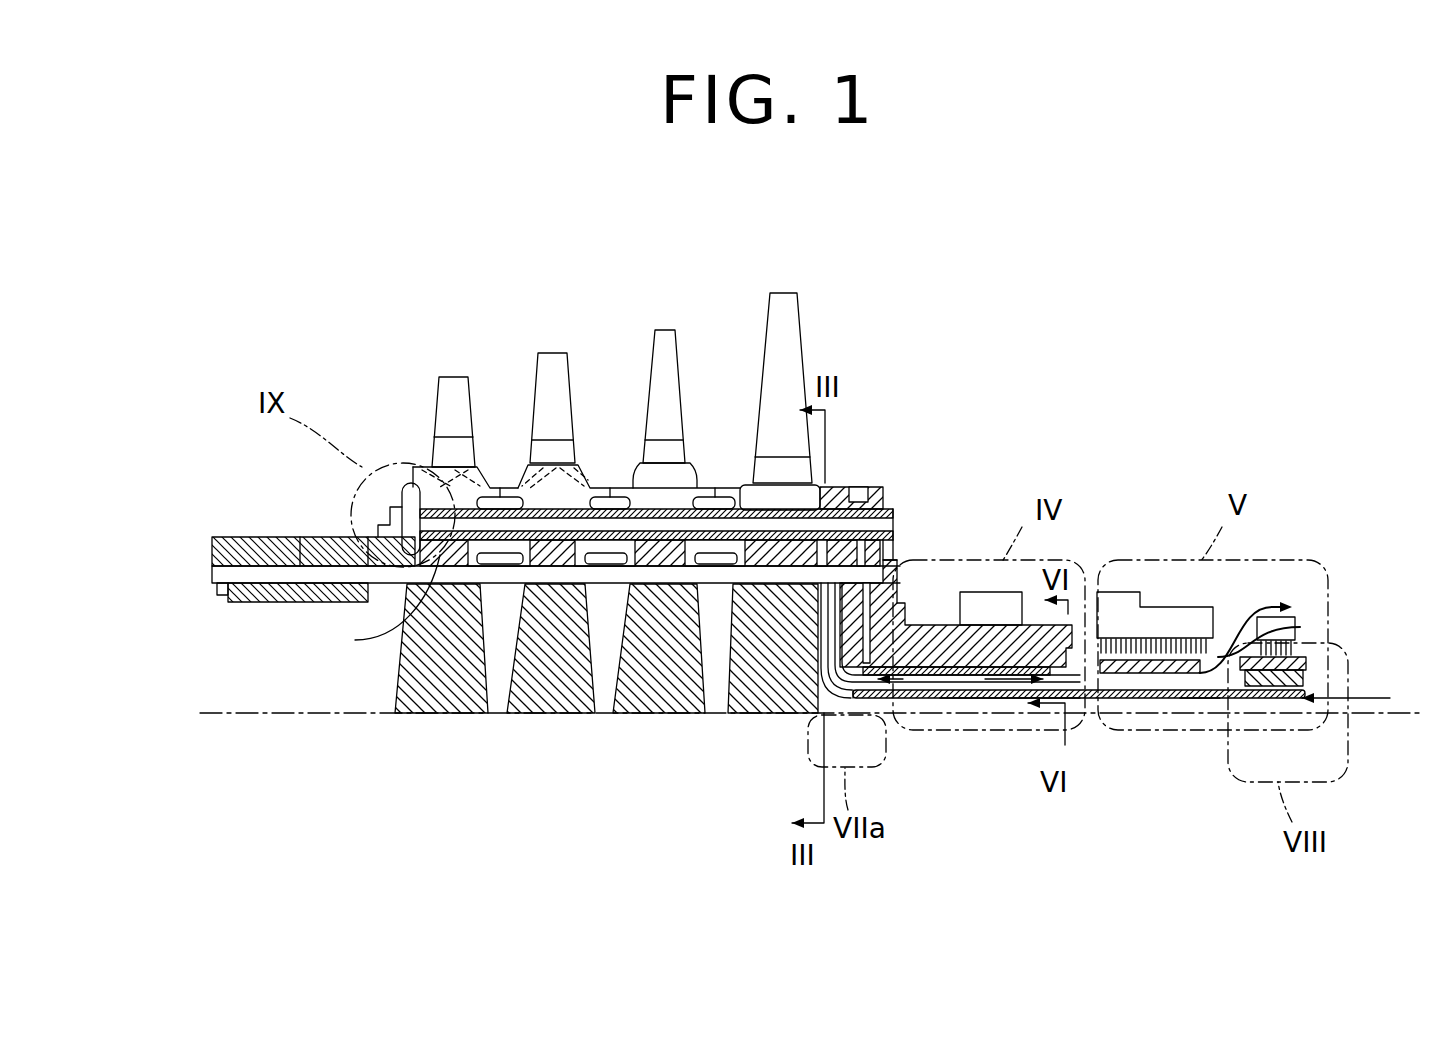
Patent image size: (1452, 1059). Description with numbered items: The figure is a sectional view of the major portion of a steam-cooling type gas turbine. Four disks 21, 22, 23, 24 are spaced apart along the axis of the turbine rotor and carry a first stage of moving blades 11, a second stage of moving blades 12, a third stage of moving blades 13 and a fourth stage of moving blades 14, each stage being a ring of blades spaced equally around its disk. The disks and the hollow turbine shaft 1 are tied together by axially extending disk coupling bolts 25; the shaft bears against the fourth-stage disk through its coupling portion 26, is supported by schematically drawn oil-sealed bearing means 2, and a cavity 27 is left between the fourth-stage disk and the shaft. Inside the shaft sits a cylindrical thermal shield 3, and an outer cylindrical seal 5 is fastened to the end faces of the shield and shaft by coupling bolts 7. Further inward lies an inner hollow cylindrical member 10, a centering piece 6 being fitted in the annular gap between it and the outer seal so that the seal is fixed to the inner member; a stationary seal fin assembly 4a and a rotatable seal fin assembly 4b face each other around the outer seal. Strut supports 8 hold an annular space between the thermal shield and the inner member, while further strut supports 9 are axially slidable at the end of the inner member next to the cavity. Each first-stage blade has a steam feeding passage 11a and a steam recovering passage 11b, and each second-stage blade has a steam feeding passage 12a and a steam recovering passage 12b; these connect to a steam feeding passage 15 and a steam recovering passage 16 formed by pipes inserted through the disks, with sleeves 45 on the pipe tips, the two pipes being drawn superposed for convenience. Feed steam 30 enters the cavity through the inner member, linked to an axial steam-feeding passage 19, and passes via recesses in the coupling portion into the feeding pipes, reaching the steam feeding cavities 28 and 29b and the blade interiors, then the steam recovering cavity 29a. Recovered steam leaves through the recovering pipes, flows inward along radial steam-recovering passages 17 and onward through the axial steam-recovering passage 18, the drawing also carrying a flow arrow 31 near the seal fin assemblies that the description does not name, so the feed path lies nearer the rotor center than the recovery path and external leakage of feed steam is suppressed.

The turbine shaft 1 is at (928, 625).
The oil-sealed bearing means 2 is at (989, 592).
The cylindrical thermal shield 3 is at (962, 712).
The stationary seal fin assembly 4a is at (1141, 632).
The rotatable seal fin assembly 4b is at (1217, 636).
The outer cylindrical seal 5 is at (1302, 628).
The centering piece 6 is at (1312, 665).
The coupling bolts 7 is at (1102, 695).
The strut supports 8 is at (1070, 690).
The strut supports 9 is at (832, 712).
The inner hollow cylindrical member 10 is at (1002, 699).
The first stage of moving blades 11 is at (455, 377).
The steam feeding passage 11a is at (428, 466).
The steam recovering passage 11b is at (452, 468).
The second stage of moving blades 12 is at (553, 353).
The steam feeding passage 12a is at (596, 466).
The steam recovering passage 12b is at (522, 468).
The third stage of moving blades 13 is at (665, 330).
The fourth stage of moving blades 14 is at (787, 293).
The steam feeding passage 15 is at (835, 490).
The steam recovering passage 16 is at (914, 454).
The radial steam-recovering passages 17 is at (905, 690).
The axial steam-recovering passage 18 is at (922, 700).
The axial steam-feeding passage 19 is at (1193, 700).
The disk 21 is at (416, 713).
The disk 22 is at (532, 713).
The disk 23 is at (644, 713).
The disk 24 is at (740, 713).
The disk coupling bolts 25 is at (214, 575).
The coupling portion 26 is at (843, 600).
The cavity 27 is at (827, 655).
The steam feeding cavity 28 is at (410, 515).
The steam recovering cavity 29a is at (371, 605).
The steam feeding cavity 29b is at (600, 538).
The feed steam 30 is at (1367, 702).
The direction arrow 31 is at (1297, 600).
The sleeves 45 is at (398, 492).